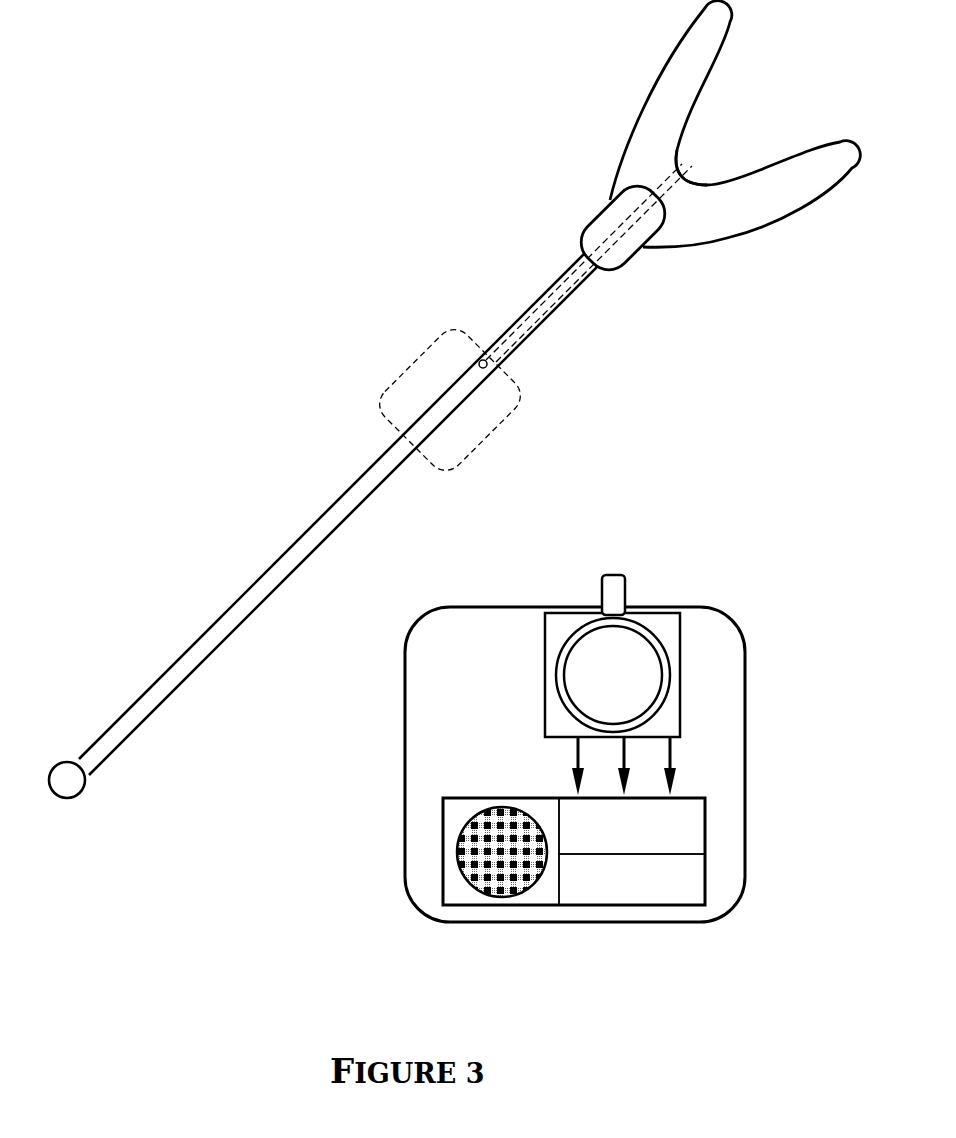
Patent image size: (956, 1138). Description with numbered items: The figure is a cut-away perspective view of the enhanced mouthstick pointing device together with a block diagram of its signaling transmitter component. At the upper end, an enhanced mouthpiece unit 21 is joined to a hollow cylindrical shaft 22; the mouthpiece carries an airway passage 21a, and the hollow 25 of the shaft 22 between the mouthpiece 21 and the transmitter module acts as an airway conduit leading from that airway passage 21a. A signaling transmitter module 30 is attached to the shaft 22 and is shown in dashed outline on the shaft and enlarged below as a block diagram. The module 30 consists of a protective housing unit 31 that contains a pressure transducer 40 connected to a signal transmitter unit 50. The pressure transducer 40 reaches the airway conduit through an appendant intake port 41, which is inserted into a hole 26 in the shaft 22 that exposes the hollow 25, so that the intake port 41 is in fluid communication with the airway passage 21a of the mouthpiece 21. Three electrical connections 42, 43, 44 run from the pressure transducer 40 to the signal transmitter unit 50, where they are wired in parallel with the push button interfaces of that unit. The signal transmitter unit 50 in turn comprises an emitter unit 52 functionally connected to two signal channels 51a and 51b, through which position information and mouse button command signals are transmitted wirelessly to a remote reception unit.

The enhanced mouthpiece unit 21 is at (759, 229).
The airway passage 21a is at (689, 163).
The hollow cylindrical shaft 22 is at (298, 538).
The hollow of shaft 25 is at (560, 293).
The hole in shaft 26 is at (481, 360).
The signaling transmitter module 30 is at (393, 381).
The protective housing unit 31 is at (745, 727).
The pressure transducer 40 is at (613, 683).
The intake port 41 is at (615, 575).
The electrical connection 42 is at (684, 766).
The electrical connection 43 is at (638, 766).
The electrical connection 44 is at (592, 766).
The signal transmitter unit 50 is at (597, 877).
The signal channel 51a is at (687, 829).
The signal channel 51b is at (692, 883).
The emitter unit 52 is at (493, 852).